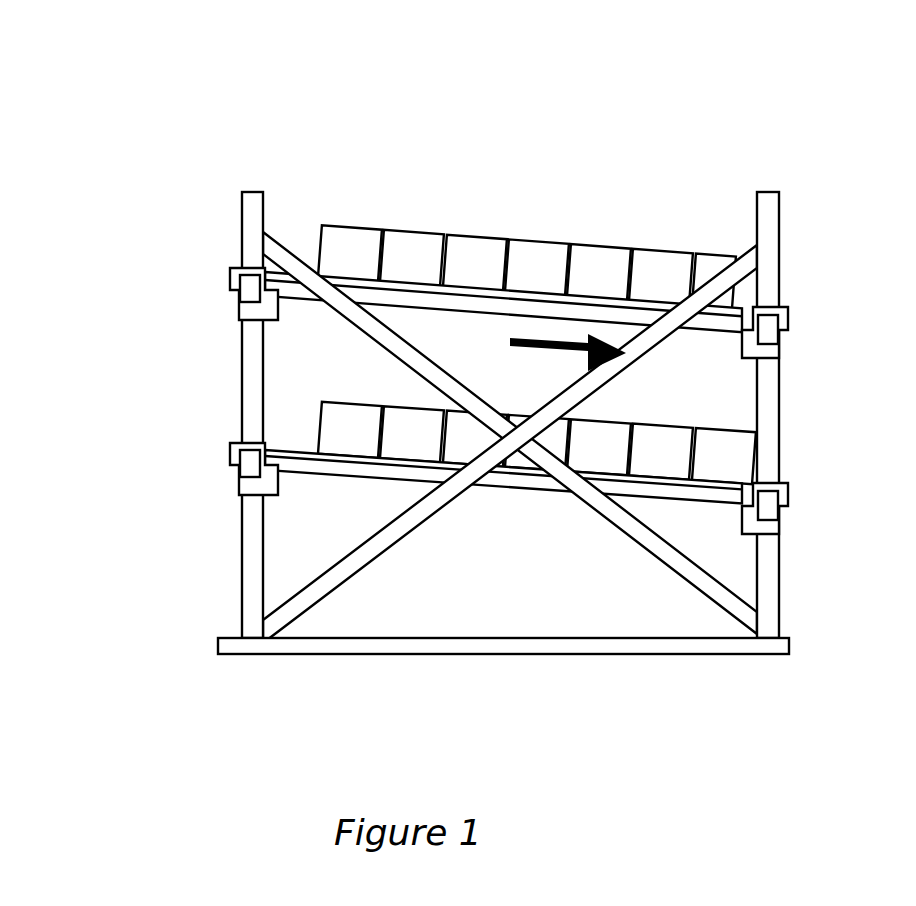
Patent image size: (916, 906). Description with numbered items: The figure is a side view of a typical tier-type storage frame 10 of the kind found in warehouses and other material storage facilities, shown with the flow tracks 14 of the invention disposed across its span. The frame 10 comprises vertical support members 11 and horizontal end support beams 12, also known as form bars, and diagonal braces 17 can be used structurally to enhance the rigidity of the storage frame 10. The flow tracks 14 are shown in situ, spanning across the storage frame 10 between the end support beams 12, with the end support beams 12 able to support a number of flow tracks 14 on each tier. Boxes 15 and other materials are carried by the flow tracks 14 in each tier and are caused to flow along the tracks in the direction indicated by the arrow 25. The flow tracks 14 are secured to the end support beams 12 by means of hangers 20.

The storage frame 10 is at (167, 134).
The vertical support member 11 is at (245, 392).
The horizontal end support beam 12 is at (248, 304).
The flow track 14 is at (398, 296).
The box 15 is at (460, 265).
The diagonal brace 17 is at (390, 537).
The hanger 20 is at (234, 268).
The flow arrow 25 is at (556, 360).